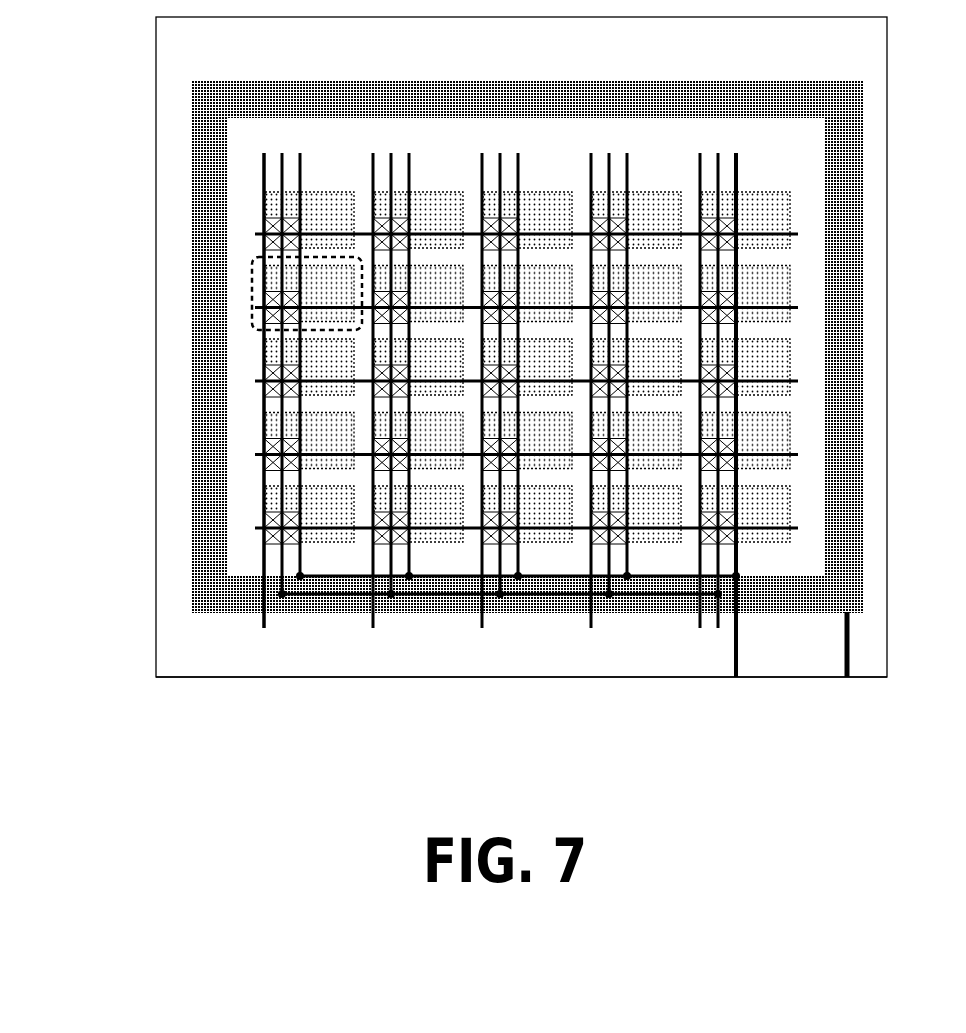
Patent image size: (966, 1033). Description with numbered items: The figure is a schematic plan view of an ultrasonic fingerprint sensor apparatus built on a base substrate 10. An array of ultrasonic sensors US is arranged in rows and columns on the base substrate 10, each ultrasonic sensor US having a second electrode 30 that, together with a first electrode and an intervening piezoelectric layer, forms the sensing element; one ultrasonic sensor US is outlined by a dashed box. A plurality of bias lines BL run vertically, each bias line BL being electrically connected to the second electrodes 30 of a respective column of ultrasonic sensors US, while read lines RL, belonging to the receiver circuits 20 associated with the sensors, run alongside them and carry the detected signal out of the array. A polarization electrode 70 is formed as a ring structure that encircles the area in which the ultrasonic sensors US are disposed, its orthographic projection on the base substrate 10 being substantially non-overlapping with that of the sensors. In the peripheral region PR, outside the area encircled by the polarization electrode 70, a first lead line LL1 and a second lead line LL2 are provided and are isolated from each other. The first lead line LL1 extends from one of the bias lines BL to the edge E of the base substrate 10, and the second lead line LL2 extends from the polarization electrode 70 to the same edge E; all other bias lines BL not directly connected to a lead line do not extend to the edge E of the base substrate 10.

The base substrate 10 is at (878, 527).
The receiver circuit 20 is at (500, 153).
The second electrode 30 is at (762, 210).
The polarization electrode 70 is at (655, 102).
The read line RL is at (264, 153).
The bias line BL is at (735, 153).
The first lead line LL1 is at (850, 642).
The second lead line LL2 is at (730, 652).
The ultrasonic sensor US is at (253, 292).
The peripheral region PR is at (208, 650).
The edge E is at (452, 678).